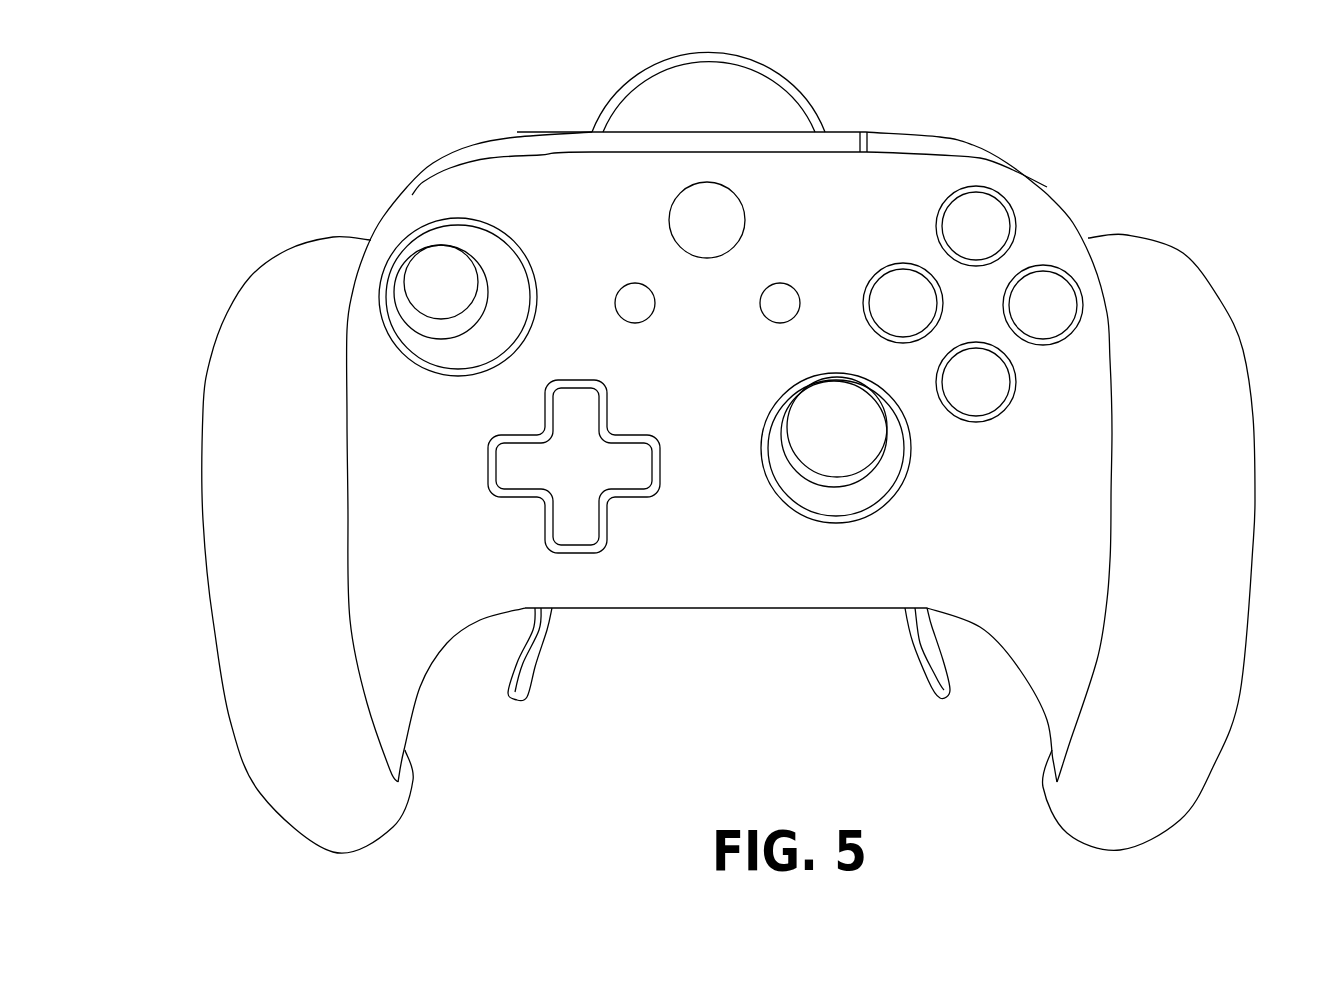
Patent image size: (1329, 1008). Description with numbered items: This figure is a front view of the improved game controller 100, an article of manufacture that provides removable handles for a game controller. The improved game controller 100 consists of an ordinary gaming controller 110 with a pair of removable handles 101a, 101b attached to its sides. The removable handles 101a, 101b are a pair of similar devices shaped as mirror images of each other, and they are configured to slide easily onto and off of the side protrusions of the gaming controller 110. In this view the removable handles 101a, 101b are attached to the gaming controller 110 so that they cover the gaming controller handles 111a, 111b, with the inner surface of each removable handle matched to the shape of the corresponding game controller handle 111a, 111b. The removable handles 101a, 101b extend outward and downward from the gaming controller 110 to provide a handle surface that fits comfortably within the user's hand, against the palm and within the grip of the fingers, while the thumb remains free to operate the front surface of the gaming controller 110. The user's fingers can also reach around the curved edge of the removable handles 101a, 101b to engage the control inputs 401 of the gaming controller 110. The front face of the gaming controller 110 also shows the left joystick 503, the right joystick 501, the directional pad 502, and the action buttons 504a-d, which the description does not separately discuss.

The improved game controller 100 is at (322, 138).
The gaming controller 110 is at (898, 143).
The removable handle 101a is at (238, 317).
The removable handle 101b is at (1202, 277).
The game controller handle 111a is at (360, 622).
The game controller handle 111b is at (1103, 615).
The left joystick 503 is at (520, 285).
The right joystick 501 is at (798, 390).
The directional pad 502 is at (637, 448).
The action buttons 504a-d is at (940, 252).
The control inputs 401 is at (937, 690).